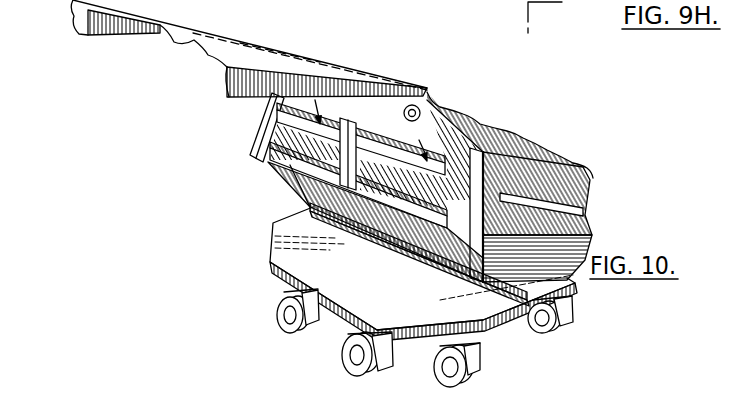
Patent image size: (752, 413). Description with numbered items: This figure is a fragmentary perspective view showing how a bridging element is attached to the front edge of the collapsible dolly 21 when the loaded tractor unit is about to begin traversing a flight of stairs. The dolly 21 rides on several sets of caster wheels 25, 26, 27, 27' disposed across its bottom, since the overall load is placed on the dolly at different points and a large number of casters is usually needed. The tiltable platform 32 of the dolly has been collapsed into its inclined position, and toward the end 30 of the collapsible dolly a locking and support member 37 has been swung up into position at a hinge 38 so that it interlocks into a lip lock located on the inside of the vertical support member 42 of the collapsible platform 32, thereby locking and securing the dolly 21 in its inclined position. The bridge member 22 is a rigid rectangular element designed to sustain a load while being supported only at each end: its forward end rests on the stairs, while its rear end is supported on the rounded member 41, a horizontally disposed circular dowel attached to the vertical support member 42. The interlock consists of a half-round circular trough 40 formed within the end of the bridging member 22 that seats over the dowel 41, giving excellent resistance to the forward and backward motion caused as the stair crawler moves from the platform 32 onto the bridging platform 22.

The dolly 21 is at (512, 126).
The bridge member 22 is at (318, 36).
The caster wheels 25 is at (555, 332).
The caster wheels 26 is at (477, 362).
The caster wheels 27 is at (379, 363).
The caster 27' is at (297, 324).
The end of the collapsible dolly 30 is at (357, 303).
The platform 32 is at (565, 166).
The locking and support member 37 is at (443, 275).
The hinge 38 is at (473, 298).
The circular trough 40 is at (420, 105).
The rounded member 41 is at (347, 140).
The vertical support member 42 is at (467, 228).